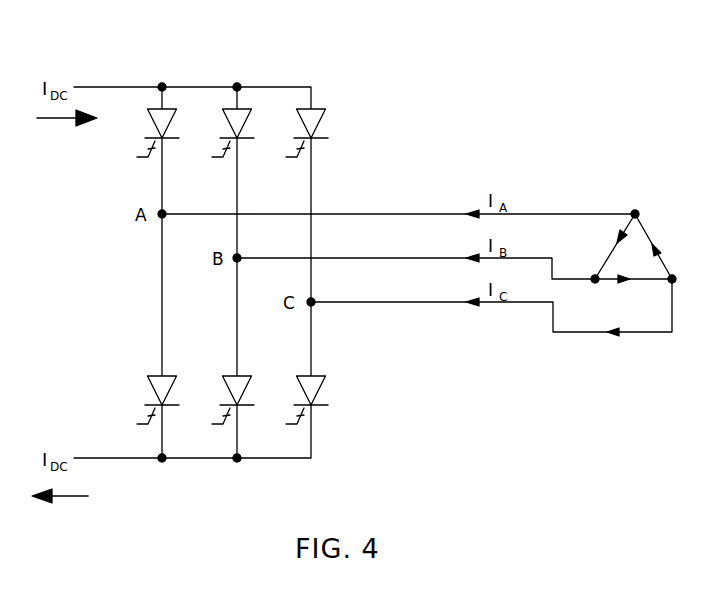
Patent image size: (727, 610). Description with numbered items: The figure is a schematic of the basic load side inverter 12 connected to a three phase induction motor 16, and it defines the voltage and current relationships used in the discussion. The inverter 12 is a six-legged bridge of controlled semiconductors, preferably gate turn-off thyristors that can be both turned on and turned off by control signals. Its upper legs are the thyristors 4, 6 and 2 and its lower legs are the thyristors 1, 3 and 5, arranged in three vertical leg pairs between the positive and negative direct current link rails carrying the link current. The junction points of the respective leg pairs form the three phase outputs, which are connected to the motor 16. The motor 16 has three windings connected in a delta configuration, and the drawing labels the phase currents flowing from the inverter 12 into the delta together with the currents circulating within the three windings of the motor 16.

The load side converter 12 is at (275, 74).
The thyristor 1 is at (151, 390).
The thyristor 2 is at (300, 123).
The thyristor 3 is at (226, 390).
The thyristor 4 is at (151, 123).
The thyristor 5 is at (300, 390).
The thyristor 6 is at (226, 123).
The induction motor 16 is at (639, 198).